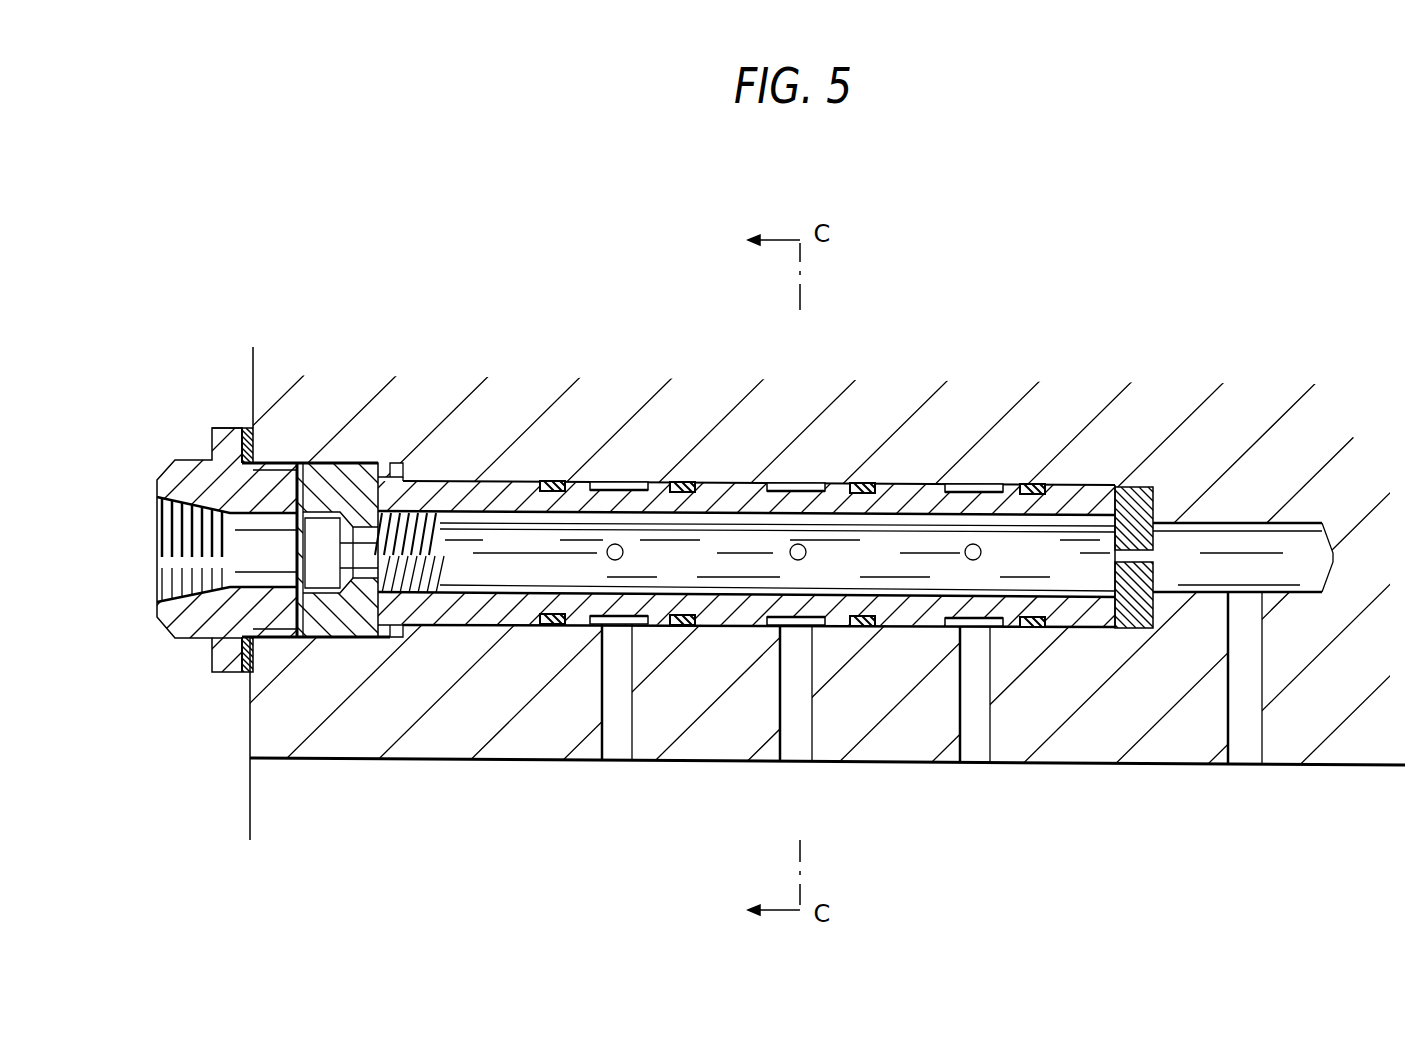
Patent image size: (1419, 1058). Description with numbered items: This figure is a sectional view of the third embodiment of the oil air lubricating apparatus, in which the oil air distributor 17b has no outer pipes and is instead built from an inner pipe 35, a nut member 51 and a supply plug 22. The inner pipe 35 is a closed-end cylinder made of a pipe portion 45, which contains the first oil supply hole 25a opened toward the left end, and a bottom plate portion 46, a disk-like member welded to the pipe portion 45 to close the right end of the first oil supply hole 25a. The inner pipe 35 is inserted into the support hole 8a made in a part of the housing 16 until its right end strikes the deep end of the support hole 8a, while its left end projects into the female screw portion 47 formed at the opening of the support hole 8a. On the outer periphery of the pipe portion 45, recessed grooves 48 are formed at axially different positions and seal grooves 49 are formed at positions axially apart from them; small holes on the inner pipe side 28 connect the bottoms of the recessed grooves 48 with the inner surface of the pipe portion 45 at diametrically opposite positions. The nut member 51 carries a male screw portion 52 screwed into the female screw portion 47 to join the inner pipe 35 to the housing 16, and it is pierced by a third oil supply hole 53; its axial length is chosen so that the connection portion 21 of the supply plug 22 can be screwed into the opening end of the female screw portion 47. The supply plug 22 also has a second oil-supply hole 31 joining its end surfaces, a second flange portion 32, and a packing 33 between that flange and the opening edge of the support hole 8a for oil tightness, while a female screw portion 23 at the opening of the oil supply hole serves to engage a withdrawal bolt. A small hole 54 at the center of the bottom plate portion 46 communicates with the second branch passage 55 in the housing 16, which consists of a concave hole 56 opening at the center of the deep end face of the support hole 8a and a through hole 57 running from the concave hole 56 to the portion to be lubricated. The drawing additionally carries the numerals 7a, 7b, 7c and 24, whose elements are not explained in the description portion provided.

The oil passage 7a is at (603, 683).
The oil passage 7b is at (781, 703).
The oil passage 7c is at (967, 683).
The support hole 8a is at (478, 622).
The housing 16 is at (352, 722).
The oil air distributor 17b is at (450, 474).
The connection portion 21 is at (272, 640).
The supply plug 22 is at (222, 622).
The female screw portion 23 is at (445, 520).
The housing wall 24 is at (560, 481).
The first oil supply hole 25a is at (722, 516).
The small holes on the inner pipe side 28 is at (623, 551).
The second oil-supply hole 31 is at (258, 575).
The second flange portion 32 is at (228, 428).
The packing 33 is at (272, 428).
The inner pipe 35 is at (1015, 627).
The pipe portion 45 is at (975, 485).
The bottom plate portion 46 is at (1137, 632).
The female screw portion 47 is at (302, 638).
The recessed grooves 48 is at (622, 482).
The seal grooves 49 is at (1037, 481).
The nut member 51 is at (362, 624).
The male screw portion 52 is at (340, 480).
The third oil supply hole 53 is at (322, 547).
The small hole 54 is at (1173, 527).
The second branch passage 55 is at (1253, 723).
The concave hole 56 is at (1232, 527).
The through hole 57 is at (1230, 625).